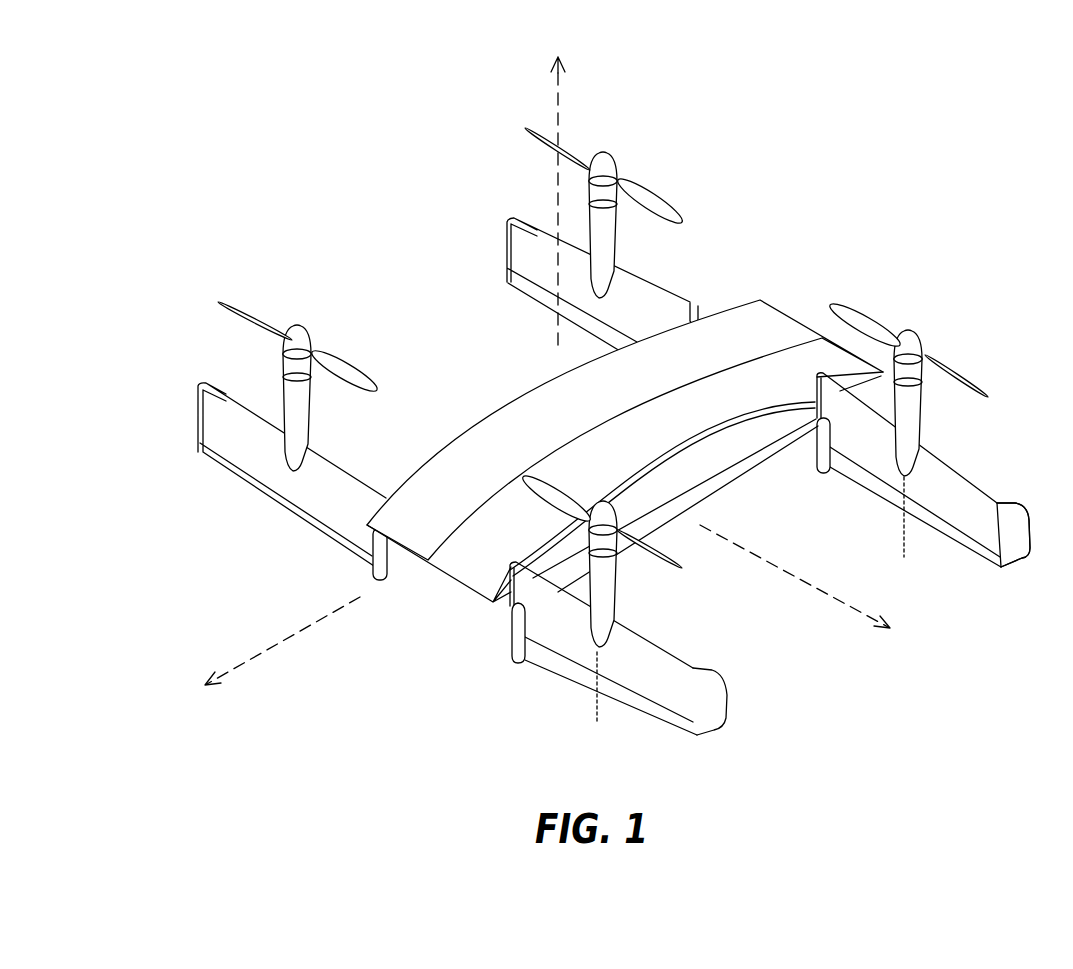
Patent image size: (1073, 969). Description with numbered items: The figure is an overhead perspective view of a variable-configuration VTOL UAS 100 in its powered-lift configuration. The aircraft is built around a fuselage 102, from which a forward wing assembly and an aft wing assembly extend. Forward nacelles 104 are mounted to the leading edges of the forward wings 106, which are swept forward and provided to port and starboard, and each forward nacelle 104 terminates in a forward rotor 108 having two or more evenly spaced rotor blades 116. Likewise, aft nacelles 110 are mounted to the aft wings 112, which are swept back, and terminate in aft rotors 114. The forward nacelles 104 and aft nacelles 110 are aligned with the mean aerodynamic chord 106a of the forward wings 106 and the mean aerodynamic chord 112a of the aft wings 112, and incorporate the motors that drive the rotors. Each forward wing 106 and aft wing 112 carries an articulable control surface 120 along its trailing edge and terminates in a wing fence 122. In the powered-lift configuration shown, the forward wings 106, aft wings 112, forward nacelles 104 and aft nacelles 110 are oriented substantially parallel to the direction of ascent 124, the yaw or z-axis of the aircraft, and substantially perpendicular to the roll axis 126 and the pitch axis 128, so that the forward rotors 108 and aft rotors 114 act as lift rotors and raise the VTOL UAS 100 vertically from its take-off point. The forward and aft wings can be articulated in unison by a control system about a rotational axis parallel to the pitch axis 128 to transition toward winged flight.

The VTOL UAS 100 is at (594, 404).
The fuselage 102 is at (525, 418).
The forward nacelle 104 is at (302, 414).
The forward wing 106 is at (240, 433).
The mean aerodynamic chord of the forward wing 106a is at (593, 707).
The forward rotor 108 is at (305, 338).
The aft nacelle 110 is at (607, 237).
The aft wing 112 is at (518, 245).
The mean aerodynamic chord of the aft wing 112a is at (900, 528).
The aft rotor 114 is at (610, 168).
The rotor blade 116 is at (260, 316).
The articulable control surface 120 is at (317, 522).
The wing fence 122 is at (1018, 543).
The direction of ascent 124 is at (552, 113).
The roll axis 126 is at (300, 632).
The pitch axis 128 is at (800, 577).